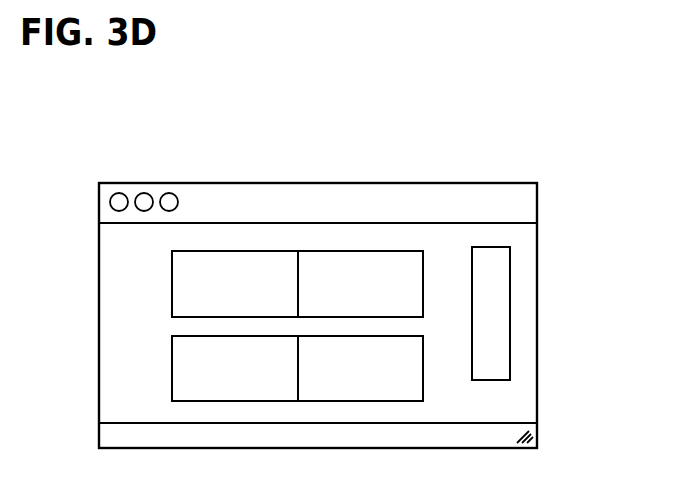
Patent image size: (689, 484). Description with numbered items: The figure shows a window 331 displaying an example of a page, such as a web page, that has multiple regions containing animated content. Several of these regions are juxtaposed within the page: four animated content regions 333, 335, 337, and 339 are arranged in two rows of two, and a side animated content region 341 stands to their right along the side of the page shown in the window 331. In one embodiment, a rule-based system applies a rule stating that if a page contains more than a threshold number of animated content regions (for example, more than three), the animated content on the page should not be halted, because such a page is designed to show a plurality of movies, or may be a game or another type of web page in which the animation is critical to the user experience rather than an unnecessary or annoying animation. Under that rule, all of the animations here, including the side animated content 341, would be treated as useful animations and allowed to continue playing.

The window 331 is at (405, 183).
The animated content region 333 is at (289, 311).
The animated content region 335 is at (412, 311).
The animated content region 337 is at (289, 391).
The animated content region 339 is at (412, 391).
The side animated content region 341 is at (488, 284).